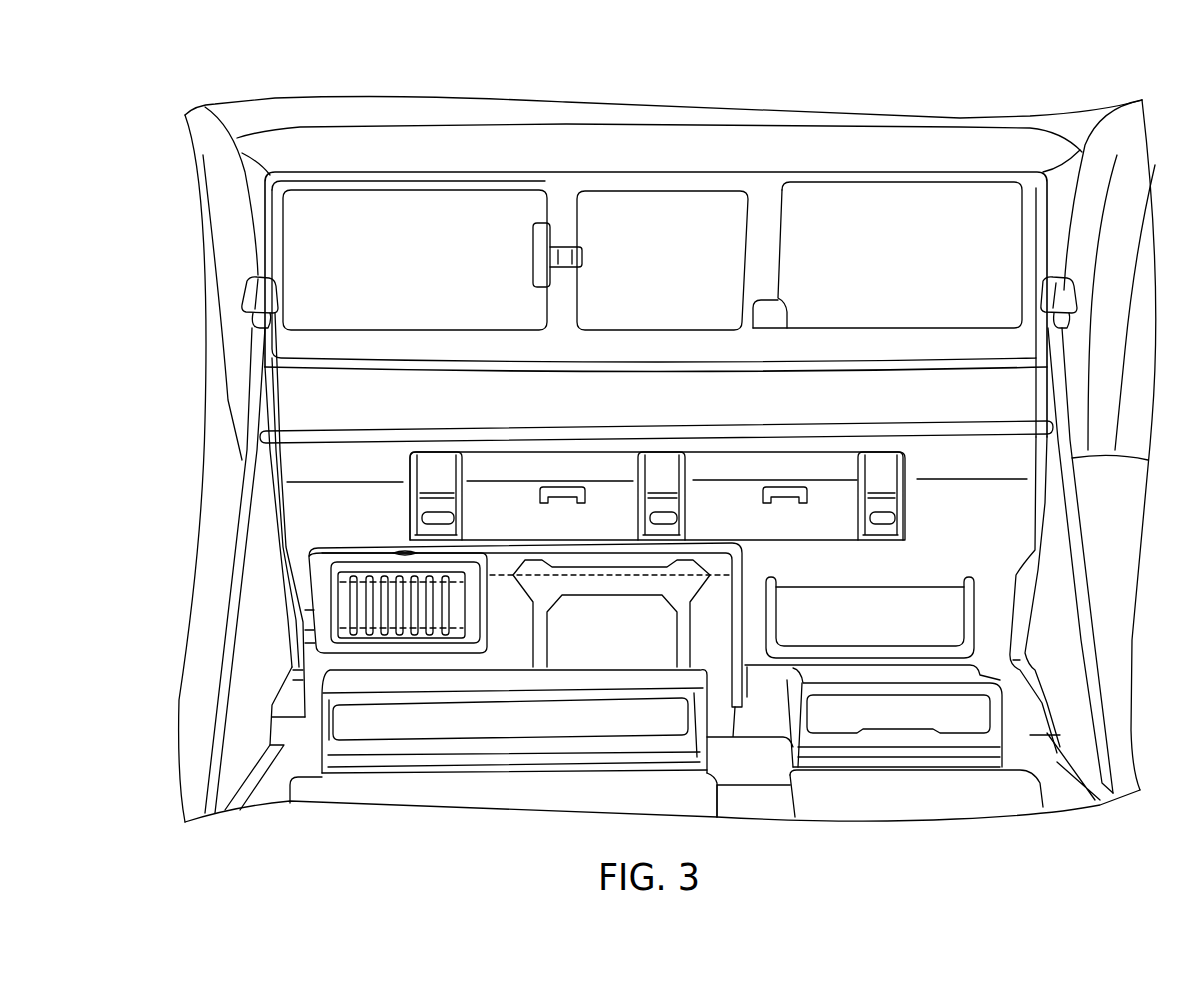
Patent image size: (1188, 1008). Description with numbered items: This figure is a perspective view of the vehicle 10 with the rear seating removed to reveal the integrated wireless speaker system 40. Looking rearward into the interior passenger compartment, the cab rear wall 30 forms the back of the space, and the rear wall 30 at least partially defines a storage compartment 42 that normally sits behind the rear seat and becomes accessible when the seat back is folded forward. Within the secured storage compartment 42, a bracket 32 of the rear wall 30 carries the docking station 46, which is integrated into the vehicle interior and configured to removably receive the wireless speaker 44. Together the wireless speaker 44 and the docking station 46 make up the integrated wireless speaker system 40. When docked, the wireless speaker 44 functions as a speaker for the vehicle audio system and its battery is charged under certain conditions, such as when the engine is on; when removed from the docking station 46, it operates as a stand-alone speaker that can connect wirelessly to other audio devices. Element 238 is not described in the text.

The vehicle 10 is at (988, 107).
The rear wall 30 is at (303, 522).
The integrated wireless speaker system 40 is at (318, 587).
The storage compartment 42 is at (297, 658).
The wireless speaker 44 is at (353, 600).
The docking station 46 is at (365, 565).
The bracket 32 is at (510, 650).
The child seat anchor 238 is at (563, 487).